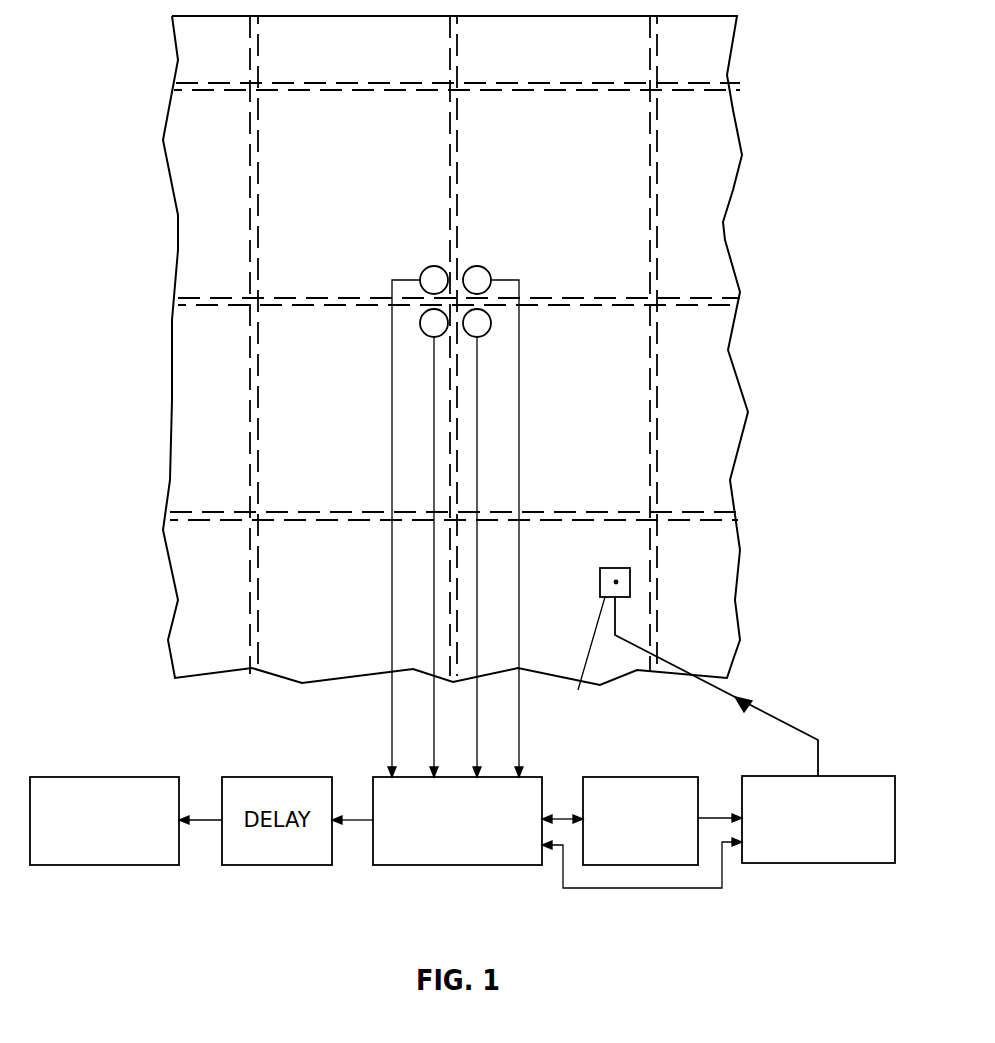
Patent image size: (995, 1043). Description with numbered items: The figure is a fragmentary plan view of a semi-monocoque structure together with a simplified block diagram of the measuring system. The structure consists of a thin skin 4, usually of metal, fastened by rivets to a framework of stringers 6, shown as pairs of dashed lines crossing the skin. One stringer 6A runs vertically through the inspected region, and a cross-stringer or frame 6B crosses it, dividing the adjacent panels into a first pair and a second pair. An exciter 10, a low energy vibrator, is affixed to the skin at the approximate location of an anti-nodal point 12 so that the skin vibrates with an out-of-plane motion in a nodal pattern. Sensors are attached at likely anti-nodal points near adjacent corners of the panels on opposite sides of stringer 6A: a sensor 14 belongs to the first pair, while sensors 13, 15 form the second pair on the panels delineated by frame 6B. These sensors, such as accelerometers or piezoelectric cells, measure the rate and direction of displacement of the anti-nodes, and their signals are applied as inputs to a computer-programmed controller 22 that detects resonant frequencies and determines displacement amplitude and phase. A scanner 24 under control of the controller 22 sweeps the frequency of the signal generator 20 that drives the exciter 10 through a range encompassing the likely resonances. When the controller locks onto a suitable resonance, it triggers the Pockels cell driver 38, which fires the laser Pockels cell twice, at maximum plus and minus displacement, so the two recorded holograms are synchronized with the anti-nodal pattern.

The thin skin 4 is at (735, 190).
The stringers 6 is at (244, 293).
The stringer being inspected 6A is at (458, 183).
The cross-stringer or frame 6B is at (332, 295).
The exciter 10 is at (600, 578).
The anti-nodal point 12 is at (624, 582).
The sensor 13 is at (425, 267).
The sensor 14 is at (423, 334).
The sensor 15 is at (470, 267).
The signal generator 20 is at (815, 863).
The computer-programmed controller 22 is at (457, 865).
The scanner 24 is at (652, 777).
The Pockels cell driver 38 is at (110, 865).